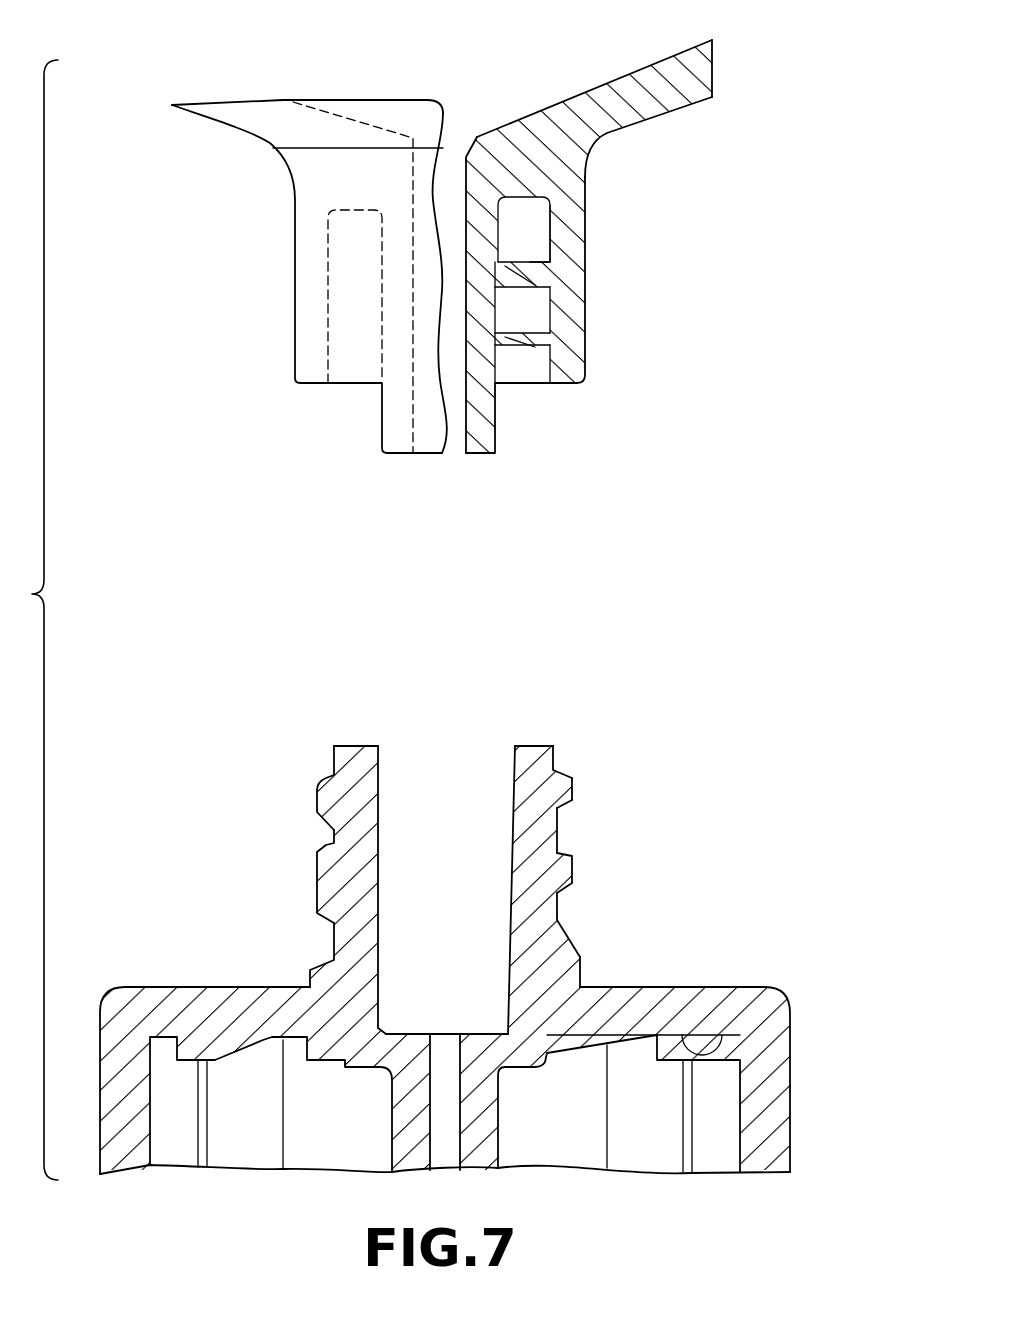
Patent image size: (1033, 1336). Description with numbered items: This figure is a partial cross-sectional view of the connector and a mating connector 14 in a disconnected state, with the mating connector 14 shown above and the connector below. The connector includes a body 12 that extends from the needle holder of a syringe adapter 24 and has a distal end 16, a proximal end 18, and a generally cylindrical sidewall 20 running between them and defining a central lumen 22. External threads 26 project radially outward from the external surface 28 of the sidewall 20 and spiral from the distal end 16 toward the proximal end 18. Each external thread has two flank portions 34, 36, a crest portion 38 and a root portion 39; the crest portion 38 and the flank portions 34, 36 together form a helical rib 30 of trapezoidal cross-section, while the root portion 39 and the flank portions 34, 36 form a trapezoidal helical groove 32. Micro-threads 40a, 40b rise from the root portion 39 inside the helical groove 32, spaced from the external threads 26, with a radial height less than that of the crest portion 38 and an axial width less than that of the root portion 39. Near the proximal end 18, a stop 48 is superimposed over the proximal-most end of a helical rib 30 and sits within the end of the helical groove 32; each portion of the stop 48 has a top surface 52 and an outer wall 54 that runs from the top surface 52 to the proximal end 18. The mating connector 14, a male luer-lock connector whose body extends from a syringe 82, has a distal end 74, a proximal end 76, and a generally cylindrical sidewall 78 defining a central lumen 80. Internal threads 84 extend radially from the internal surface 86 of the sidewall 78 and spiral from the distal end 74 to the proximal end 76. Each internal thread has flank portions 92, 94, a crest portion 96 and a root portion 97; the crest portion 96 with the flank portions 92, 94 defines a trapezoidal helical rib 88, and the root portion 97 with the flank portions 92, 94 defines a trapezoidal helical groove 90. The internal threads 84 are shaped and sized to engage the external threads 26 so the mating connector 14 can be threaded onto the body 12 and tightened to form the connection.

The body 12 is at (515, 778).
The mating connector 14 is at (570, 213).
The distal end 16 is at (527, 752).
The proximal end 18 is at (544, 1008).
The sidewall 20 is at (376, 778).
The central lumen 22 is at (428, 762).
The syringe adapter 24 is at (792, 1032).
The external threads 26 is at (318, 800).
The external surface 28 is at (331, 748).
The helical rib 30 is at (320, 812).
The helical groove 32 is at (320, 938).
The flank portion 34 is at (560, 770).
The flank portion 36 is at (570, 810).
The crest portion 38 is at (575, 793).
The root portion 39 is at (565, 828).
The micro-thread 40a is at (320, 846).
The micro-thread 40b is at (568, 840).
The stop 48 is at (568, 960).
The top surface 52 is at (565, 940).
The outer wall 54 is at (580, 968).
The distal end 74 is at (562, 385).
The proximal end 76 is at (525, 140).
The sidewall 78 is at (570, 218).
The central lumen 80 is at (450, 447).
The syringe 82 is at (667, 68).
The internal threads 84 is at (533, 222).
The internal surface 86 is at (532, 355).
The helical rib 88 is at (528, 242).
The helical groove 90 is at (515, 276).
The flank portion 92 is at (466, 190).
The flank portion 94 is at (535, 343).
The crest portion 96 is at (532, 313).
The root portion 97 is at (528, 284).